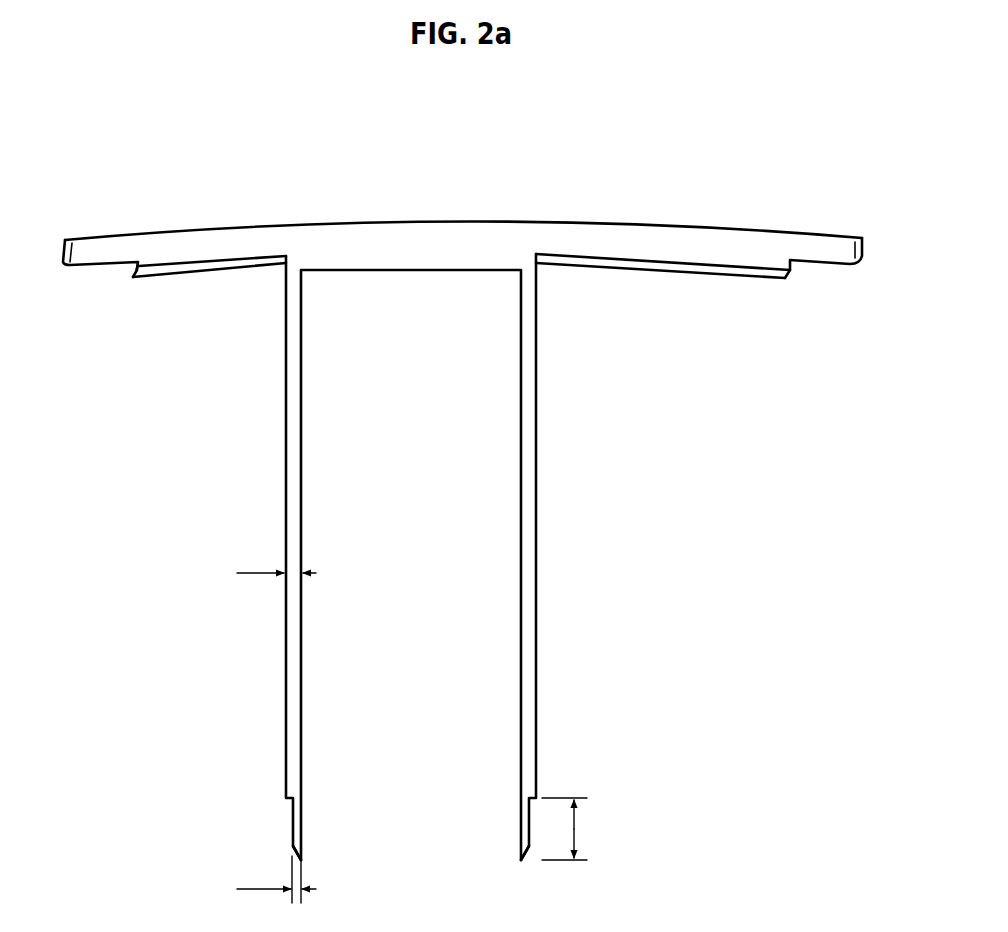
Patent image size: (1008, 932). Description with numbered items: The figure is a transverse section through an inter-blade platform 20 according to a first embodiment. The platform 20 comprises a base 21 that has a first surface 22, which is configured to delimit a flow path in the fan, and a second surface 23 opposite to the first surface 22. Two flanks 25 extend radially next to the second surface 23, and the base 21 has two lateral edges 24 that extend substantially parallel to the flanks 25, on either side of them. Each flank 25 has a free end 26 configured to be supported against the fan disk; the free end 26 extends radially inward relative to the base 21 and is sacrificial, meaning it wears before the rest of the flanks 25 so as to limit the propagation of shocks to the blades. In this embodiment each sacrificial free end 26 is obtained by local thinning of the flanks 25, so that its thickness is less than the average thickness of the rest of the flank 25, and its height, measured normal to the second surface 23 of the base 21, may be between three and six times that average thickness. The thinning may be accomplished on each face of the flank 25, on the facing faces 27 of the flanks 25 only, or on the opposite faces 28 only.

The platform 20 is at (556, 116).
The base 21 is at (639, 246).
The first surface 22 is at (152, 235).
The second surface 23 is at (182, 283).
The lateral edges 24 is at (99, 250).
The flanks 25 is at (295, 510).
The free end 26 is at (297, 818).
The facing faces 27 is at (303, 423).
The opposite faces 28 is at (284, 423).